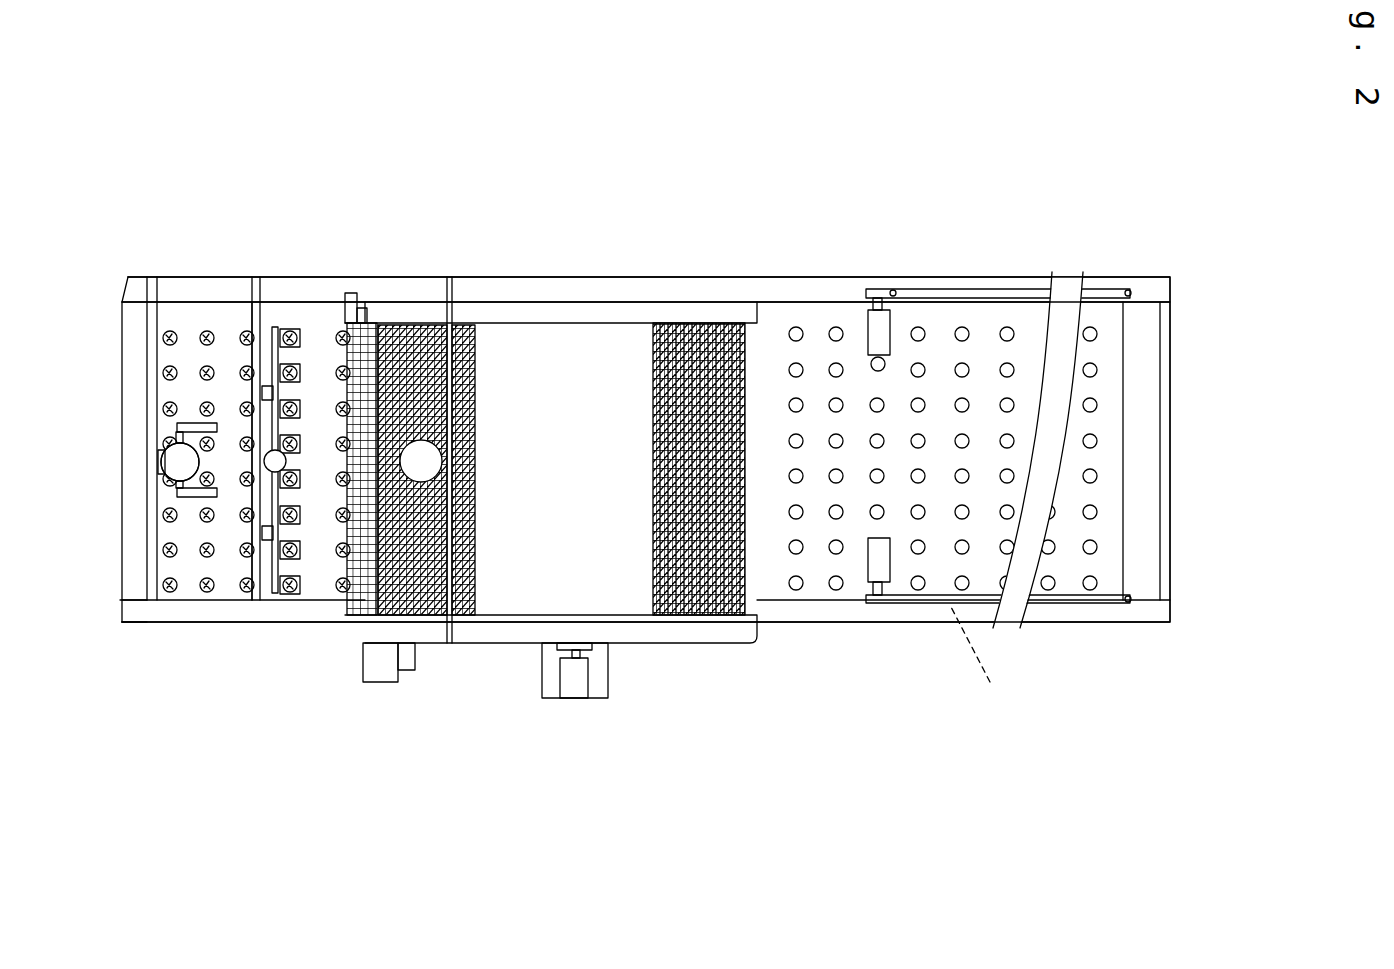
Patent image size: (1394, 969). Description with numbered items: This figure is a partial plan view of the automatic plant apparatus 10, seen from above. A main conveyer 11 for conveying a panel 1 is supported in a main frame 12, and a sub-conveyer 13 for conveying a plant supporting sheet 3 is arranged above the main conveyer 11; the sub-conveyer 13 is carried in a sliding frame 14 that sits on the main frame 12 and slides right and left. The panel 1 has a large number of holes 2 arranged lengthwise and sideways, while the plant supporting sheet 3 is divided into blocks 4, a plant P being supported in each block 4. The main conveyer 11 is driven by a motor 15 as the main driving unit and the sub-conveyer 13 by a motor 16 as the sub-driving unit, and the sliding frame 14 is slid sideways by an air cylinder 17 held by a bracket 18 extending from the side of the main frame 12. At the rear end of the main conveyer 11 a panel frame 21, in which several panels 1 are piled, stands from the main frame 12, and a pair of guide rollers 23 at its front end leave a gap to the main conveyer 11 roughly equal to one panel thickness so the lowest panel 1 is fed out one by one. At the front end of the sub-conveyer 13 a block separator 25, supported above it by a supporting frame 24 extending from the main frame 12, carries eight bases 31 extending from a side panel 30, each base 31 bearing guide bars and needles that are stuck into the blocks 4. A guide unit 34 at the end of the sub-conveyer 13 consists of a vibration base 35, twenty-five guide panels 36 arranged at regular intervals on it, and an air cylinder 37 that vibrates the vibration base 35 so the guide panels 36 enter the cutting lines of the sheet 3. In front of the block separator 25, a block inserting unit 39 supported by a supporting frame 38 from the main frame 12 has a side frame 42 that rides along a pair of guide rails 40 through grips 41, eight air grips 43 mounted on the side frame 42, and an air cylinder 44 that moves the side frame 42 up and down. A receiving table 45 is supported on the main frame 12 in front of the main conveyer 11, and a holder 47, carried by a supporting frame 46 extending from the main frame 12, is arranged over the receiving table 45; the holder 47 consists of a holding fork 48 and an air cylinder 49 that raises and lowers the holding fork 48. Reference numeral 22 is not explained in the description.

The automatic plant apparatus 10 is at (622, 196).
The panel 1 is at (785, 302).
The holes 2 is at (201, 290).
The plant supporting sheet 3 is at (427, 617).
The blocks 4 is at (205, 370).
The main conveyer 11 is at (990, 660).
The main frame 12 is at (188, 623).
The sub-conveyer 13 is at (502, 607).
The sliding frame 14 is at (752, 643).
The motor 15 is at (410, 671).
The motor 16 is at (377, 683).
The air cylinder 17 is at (583, 699).
The bracket 18 is at (610, 668).
The panel frame 21 is at (970, 290).
The actuating cylinder 22 is at (878, 292).
The guide rollers 23 is at (866, 572).
The supporting frame 24 is at (440, 418).
The block separator 25 is at (432, 466).
The side panel 30 is at (387, 498).
The bases 31 is at (390, 322).
The guide unit 34 is at (338, 497).
The vibration base 35 is at (322, 322).
The guide panel 36 is at (368, 630).
The air cylinder 37 is at (358, 298).
The supporting frame 38 is at (230, 290).
The block inserting unit 39 is at (336, 588).
The guide rails 40 is at (262, 393).
The grips 41 is at (261, 601).
The side frame 42 is at (270, 290).
The air grips 43 is at (302, 290).
The air cylinder 44 is at (267, 455).
The receiving table 45 is at (120, 620).
The supporting frame 46 is at (148, 352).
The holder 47 is at (150, 464).
The holding fork 48 is at (176, 428).
The air cylinder 49 is at (173, 467).
The plant P is at (217, 601).